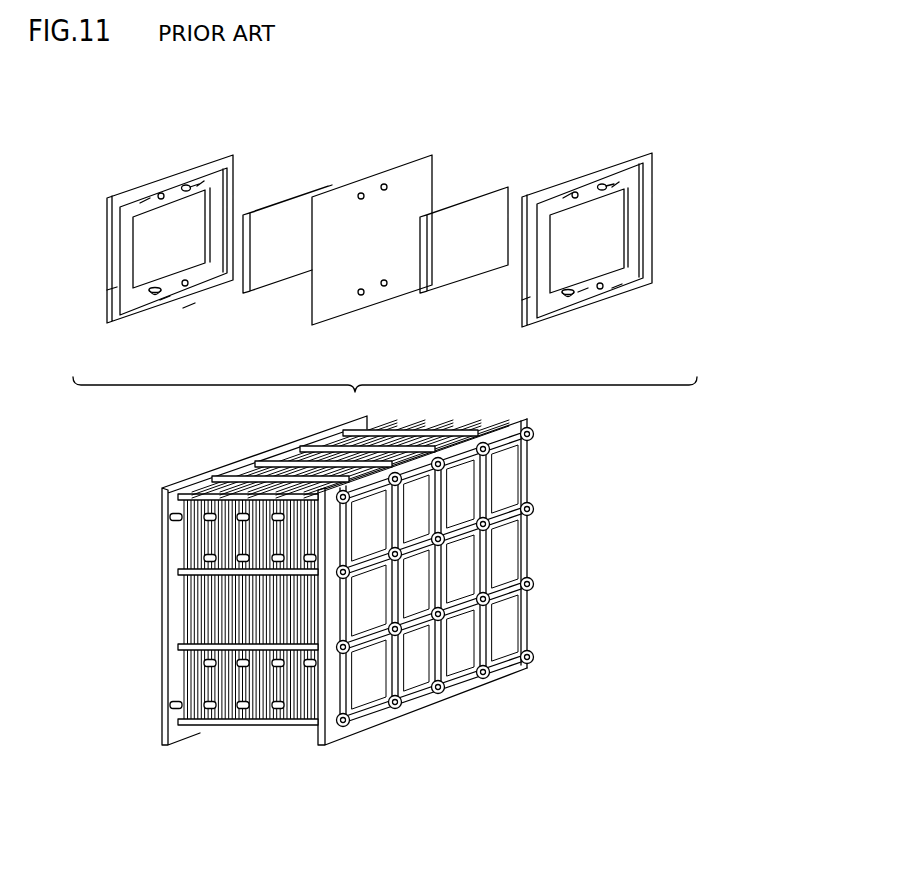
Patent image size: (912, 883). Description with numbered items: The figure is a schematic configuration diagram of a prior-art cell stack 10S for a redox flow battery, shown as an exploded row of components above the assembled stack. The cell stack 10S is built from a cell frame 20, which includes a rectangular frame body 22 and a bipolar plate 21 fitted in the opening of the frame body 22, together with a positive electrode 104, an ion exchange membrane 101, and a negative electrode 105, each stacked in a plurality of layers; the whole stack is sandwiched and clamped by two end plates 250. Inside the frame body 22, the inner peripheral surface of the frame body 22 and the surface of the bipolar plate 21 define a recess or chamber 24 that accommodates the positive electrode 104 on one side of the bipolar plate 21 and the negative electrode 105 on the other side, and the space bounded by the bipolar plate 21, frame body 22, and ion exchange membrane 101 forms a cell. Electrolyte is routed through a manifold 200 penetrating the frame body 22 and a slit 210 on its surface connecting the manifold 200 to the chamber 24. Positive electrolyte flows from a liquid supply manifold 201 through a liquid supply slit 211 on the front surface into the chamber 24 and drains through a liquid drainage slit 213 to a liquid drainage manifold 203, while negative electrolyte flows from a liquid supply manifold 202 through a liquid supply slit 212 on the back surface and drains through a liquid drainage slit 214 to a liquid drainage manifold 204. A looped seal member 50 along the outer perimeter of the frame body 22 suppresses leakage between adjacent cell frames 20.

The cell frame 20 is at (236, 153).
The bipolar plate 21 is at (618, 200).
The frame body 22 is at (633, 243).
The recess (chamber) 24 is at (140, 243).
The seal member 50 is at (117, 287).
The ion exchange membrane 101 is at (393, 168).
The positive electrode 104 is at (291, 279).
The negative electrode 105 is at (445, 287).
The cell stack 10S is at (352, 580).
The manifold 200 is at (748, 437).
The liquid supply manifold 201 is at (163, 300).
The liquid supply manifold 202 is at (187, 307).
The liquid drainage manifold 203 is at (182, 184).
The liquid drainage manifold 204 is at (157, 188).
The slit 210 is at (748, 465).
The liquid supply slit 211 is at (142, 294).
The liquid supply slit 212 is at (213, 298).
The liquid drainage slit 213 is at (198, 183).
The liquid drainage slit 214 is at (140, 203).
The end plate 250 is at (162, 498).